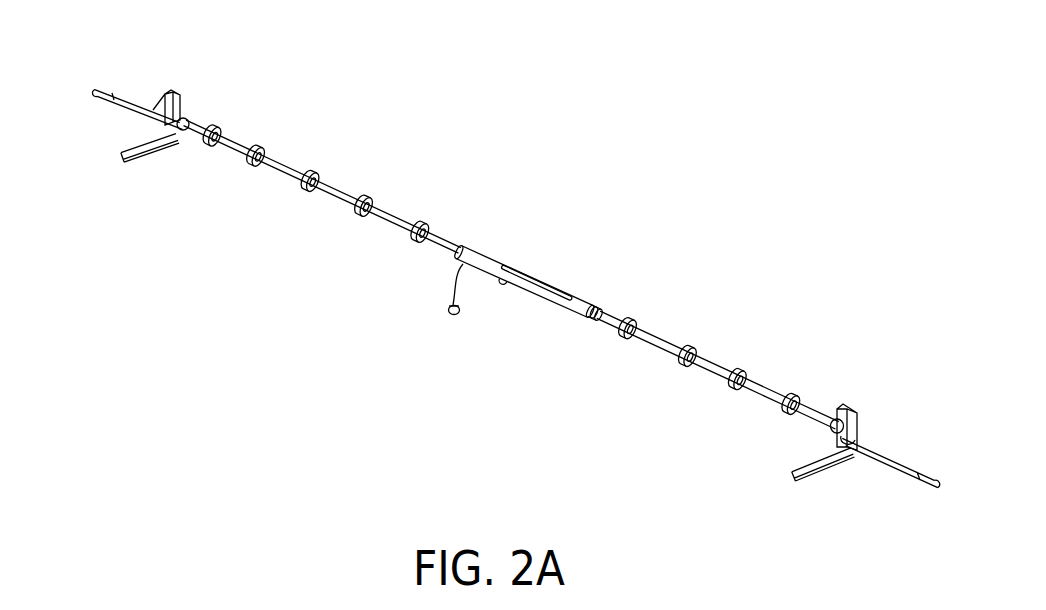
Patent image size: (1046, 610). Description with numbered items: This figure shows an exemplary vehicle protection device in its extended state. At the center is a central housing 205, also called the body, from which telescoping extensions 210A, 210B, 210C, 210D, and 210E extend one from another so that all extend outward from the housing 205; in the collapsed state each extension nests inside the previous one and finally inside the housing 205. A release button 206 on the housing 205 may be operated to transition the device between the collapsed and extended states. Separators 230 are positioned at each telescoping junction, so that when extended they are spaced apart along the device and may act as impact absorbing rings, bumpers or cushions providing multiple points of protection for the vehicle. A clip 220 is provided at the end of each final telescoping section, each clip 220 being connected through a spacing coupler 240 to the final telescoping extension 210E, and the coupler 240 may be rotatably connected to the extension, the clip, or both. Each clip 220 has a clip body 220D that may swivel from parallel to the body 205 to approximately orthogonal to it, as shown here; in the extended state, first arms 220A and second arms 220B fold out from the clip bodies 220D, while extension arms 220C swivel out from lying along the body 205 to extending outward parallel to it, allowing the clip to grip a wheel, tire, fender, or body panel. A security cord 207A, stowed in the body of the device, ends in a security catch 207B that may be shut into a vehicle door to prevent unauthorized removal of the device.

The clip 220 is at (135, 82).
The spacing coupler 240 is at (193, 119).
The separator 230 is at (261, 142).
The central housing 205 is at (478, 260).
The release button 206 is at (537, 276).
The security cord 207A is at (458, 298).
The security catch 207B is at (452, 317).
The telescoping extension 210A is at (603, 318).
The telescoping extension 210B is at (662, 347).
The telescoping extension 210C is at (703, 370).
The telescoping extension 210D is at (760, 397).
The final telescoping extension 210E is at (800, 430).
The first arm 220A is at (815, 477).
The second arm 220B is at (835, 407).
The extension arm 220C is at (893, 467).
The clip body 220D is at (860, 420).